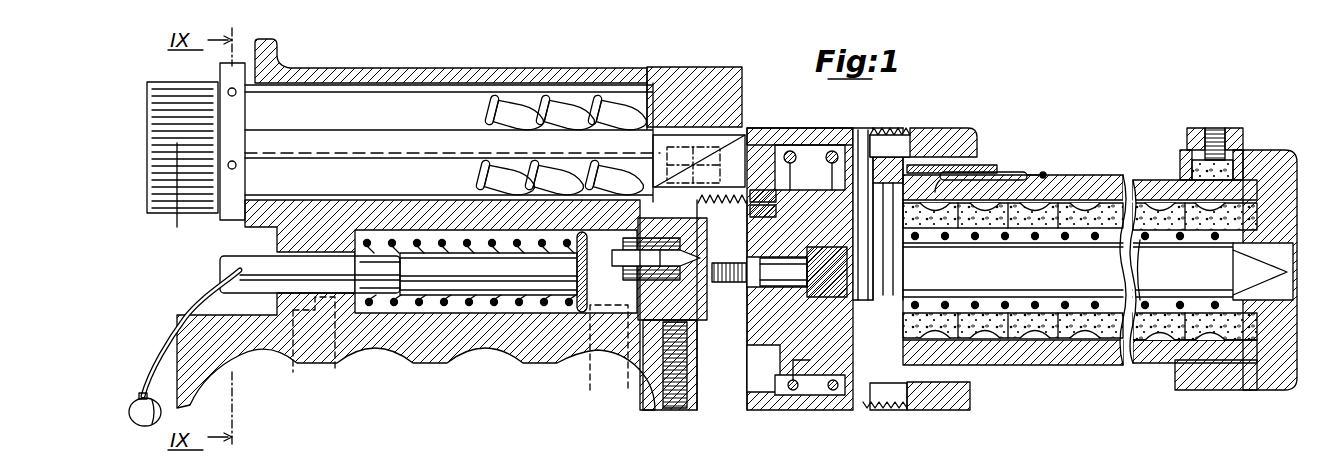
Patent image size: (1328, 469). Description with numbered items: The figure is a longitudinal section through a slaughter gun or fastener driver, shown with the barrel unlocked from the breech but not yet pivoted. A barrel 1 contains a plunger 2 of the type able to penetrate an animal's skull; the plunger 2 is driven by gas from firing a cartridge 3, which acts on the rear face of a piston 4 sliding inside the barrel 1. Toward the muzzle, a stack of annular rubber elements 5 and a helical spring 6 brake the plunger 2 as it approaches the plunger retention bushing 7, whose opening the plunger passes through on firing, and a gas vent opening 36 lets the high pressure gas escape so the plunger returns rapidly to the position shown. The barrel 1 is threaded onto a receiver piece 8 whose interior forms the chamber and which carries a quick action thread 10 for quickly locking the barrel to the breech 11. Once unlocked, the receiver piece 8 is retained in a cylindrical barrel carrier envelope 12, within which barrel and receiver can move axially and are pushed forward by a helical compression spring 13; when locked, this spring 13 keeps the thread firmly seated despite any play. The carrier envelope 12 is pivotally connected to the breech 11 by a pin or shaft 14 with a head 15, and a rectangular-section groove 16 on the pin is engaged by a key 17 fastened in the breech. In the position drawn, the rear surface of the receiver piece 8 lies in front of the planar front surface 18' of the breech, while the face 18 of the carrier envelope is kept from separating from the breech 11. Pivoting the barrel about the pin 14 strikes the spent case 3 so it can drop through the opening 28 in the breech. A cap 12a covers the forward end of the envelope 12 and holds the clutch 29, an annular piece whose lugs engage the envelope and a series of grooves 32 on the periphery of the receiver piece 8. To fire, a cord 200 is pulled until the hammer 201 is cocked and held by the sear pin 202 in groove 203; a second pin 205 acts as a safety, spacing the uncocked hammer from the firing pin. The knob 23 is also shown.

The barrel 1 is at (1090, 187).
The plunger 2 is at (1065, 285).
The cartridge 3 is at (690, 412).
The piston 4 is at (863, 223).
The annular rubber elements 5 is at (1050, 213).
The helical spring 6 is at (1093, 227).
The plunger retention bushing 7 is at (1273, 177).
The receiver piece 8 is at (803, 203).
The quick action thread 10 is at (768, 200).
The breech 11 is at (668, 203).
The barrel carrier envelope 12 is at (833, 127).
The cap 12a is at (937, 153).
The helical compression spring 13 is at (813, 408).
The pin or shaft 14 is at (667, 157).
The head 15 is at (772, 213).
The groove 16 is at (712, 150).
The key 17 is at (702, 183).
The face of the carrier envelope 18 is at (761, 398).
The planar front surface of the breech 18' is at (794, 406).
The knob 23 is at (165, 203).
The opening 28 is at (720, 363).
The clutch 29 is at (957, 167).
The grooves 32 is at (900, 405).
The gas vent opening 36 is at (990, 170).
The cord 200 is at (132, 428).
The hammer 201 is at (510, 277).
The sear pin 202 is at (297, 373).
The groove 203 is at (387, 292).
The second pin 205 is at (584, 366).